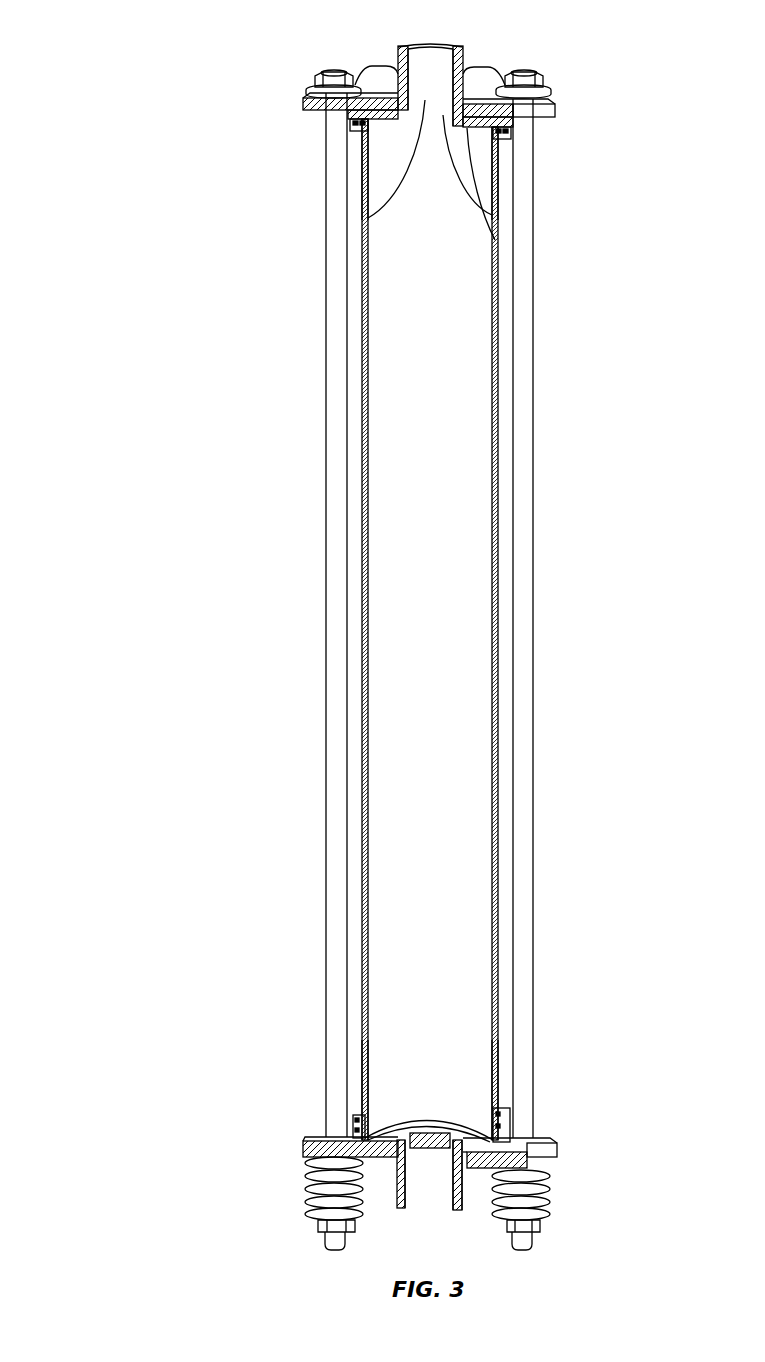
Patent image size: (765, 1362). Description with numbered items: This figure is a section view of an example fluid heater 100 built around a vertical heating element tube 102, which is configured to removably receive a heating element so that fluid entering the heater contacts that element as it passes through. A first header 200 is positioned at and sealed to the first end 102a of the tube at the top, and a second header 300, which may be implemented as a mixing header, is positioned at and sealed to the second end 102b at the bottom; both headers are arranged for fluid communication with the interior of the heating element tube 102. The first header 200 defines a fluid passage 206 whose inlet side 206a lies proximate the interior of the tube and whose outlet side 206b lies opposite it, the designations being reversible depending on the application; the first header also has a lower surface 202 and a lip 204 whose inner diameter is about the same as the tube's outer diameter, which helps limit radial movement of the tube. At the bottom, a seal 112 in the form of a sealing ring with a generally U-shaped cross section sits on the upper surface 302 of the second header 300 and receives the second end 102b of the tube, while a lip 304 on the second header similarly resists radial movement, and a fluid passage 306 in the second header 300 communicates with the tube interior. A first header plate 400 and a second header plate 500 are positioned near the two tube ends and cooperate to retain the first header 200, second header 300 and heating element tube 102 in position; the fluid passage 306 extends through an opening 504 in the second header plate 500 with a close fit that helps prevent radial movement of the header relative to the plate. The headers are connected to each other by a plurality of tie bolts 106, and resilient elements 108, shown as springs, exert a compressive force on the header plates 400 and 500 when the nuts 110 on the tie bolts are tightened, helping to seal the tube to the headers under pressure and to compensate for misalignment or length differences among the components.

The fluid heater 100 is at (158, 109).
The heating element tube 102 is at (362, 503).
The first end 102a is at (362, 165).
The second end 102b is at (363, 1087).
The tie bolts 106 is at (332, 313).
The resilient elements 108 is at (305, 1172).
The nuts 110 is at (328, 73).
The seal 112 is at (437, 1133).
The first header 200 is at (465, 52).
The lower surface 202 is at (483, 210).
The lip 204 is at (512, 128).
The fluid passage 206 is at (368, 218).
The inlet side 206a is at (496, 240).
The outlet side 206b is at (423, 57).
The second header 300 is at (548, 1140).
The upper surface 302 is at (410, 1128).
The lip 304 is at (505, 1140).
The fluid passage 306 is at (428, 1190).
The first header plate 400 is at (548, 90).
The second header plate 500 is at (318, 1135).
The opening 504 is at (468, 1175).